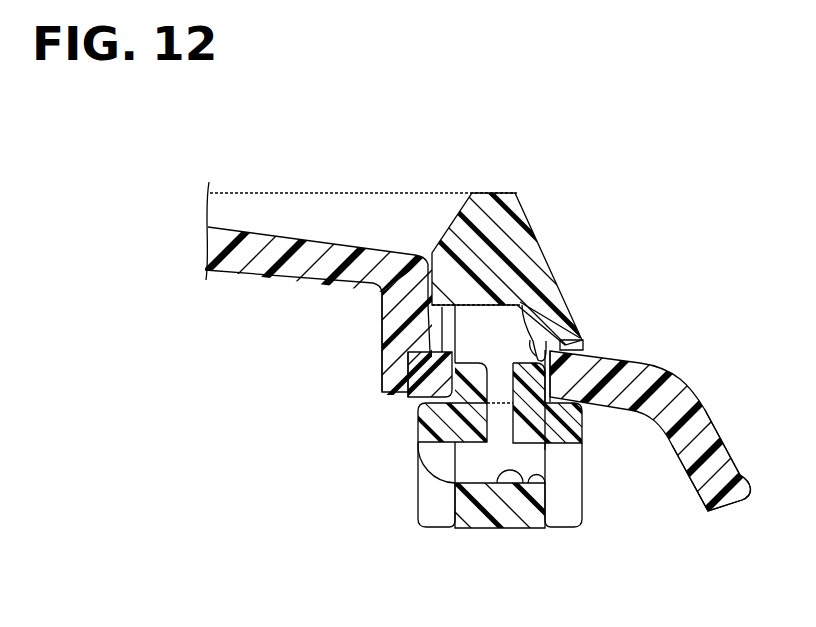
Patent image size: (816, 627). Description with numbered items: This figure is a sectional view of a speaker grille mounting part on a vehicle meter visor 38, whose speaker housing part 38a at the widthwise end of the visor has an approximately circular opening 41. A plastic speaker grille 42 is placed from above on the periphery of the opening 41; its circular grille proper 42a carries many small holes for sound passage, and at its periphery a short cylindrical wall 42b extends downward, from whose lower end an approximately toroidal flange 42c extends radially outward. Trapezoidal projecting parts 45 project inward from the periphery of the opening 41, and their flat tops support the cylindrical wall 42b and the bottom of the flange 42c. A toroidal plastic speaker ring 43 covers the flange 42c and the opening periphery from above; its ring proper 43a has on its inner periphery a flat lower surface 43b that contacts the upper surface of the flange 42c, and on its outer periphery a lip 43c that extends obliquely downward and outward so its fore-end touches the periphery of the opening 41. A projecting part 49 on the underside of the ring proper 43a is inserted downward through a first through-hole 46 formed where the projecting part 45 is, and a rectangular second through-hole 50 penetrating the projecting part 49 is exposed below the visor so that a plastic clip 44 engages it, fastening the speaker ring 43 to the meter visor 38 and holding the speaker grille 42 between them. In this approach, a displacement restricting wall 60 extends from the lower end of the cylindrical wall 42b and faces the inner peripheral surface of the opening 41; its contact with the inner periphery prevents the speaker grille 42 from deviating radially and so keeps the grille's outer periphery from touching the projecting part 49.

The meter visor 38 is at (740, 435).
The speaker housing part 38a is at (660, 363).
The opening 41 is at (382, 388).
The speaker grille 42 is at (268, 233).
The grille proper 42a is at (226, 227).
The cylindrical wall 42b is at (378, 333).
The flange 42c is at (535, 245).
The speaker ring 43 is at (419, 184).
The ring proper 43a is at (494, 194).
The flat lower surface 43b is at (382, 297).
The lip 43c is at (583, 341).
The clip 44 is at (404, 451).
The projecting part 45 is at (408, 353).
The first through-hole 46 is at (550, 338).
The projecting part 49 is at (472, 522).
The second through-hole 50 is at (503, 529).
The displacement restricting wall 60 is at (408, 378).